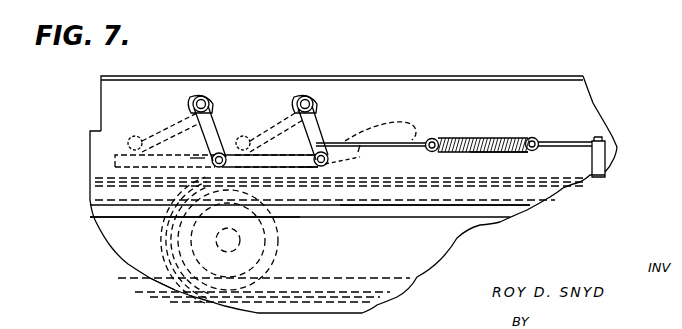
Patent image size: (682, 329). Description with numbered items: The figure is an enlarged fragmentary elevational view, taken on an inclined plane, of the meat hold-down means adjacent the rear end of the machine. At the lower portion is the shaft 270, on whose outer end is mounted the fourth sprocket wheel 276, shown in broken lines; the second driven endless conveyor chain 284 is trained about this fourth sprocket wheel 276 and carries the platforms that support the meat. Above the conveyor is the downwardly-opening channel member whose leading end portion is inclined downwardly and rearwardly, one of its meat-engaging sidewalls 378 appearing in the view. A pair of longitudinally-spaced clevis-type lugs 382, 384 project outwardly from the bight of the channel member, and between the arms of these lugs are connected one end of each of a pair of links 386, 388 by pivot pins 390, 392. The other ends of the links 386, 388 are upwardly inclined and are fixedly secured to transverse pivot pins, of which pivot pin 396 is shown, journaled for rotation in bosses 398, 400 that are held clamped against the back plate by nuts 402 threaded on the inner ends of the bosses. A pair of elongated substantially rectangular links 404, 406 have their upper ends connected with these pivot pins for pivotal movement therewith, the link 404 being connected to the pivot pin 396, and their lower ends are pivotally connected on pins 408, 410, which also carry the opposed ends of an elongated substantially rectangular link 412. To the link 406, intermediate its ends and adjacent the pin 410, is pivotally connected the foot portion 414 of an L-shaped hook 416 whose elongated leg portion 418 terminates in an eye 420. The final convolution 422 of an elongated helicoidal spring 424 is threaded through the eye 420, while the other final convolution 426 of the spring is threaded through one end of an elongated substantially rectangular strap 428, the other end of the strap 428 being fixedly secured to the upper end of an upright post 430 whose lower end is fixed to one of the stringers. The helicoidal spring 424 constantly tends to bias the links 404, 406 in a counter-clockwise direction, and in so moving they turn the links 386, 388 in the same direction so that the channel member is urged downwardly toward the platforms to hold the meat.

The shaft 270 is at (278, 248).
The fourth sprocket wheel 276 is at (160, 290).
The second driven endless conveyor chain 284 is at (343, 200).
The meat-engaging sidewall 378 is at (165, 182).
The clevis-type lug 382 is at (262, 152).
The clevis-type lug 384 is at (144, 153).
The link 386 is at (276, 117).
The link 388 is at (170, 118).
The pivot pin 390 is at (244, 136).
The pivot pin 392 is at (140, 136).
The pivot pin 396 is at (212, 101).
The boss 398 is at (205, 108).
The boss 400 is at (312, 93).
The nut 402 is at (197, 93).
The elongated substantially rectangular link 404 is at (196, 151).
The elongated substantially rectangular link 406 is at (322, 105).
The pin 408 is at (240, 167).
The pin 410 is at (328, 163).
The elongated substantially rectangular link 412 is at (302, 166).
The foot portion 414 is at (318, 140).
The L-shaped hook 416 is at (395, 148).
The leg portion 418 is at (359, 155).
The eye 420 is at (430, 138).
The final convolution 422 is at (447, 136).
The elongated helicoidal spring 424 is at (490, 134).
The final convolution 426 is at (537, 137).
The elongated substantially rectangular strap 428 is at (560, 142).
The upright post 430 is at (608, 152).